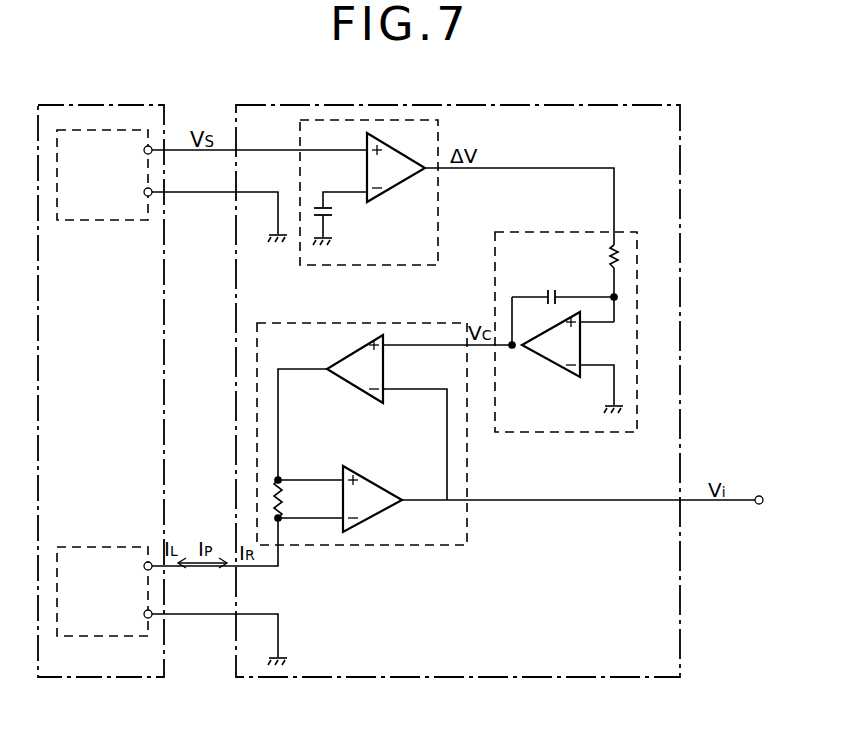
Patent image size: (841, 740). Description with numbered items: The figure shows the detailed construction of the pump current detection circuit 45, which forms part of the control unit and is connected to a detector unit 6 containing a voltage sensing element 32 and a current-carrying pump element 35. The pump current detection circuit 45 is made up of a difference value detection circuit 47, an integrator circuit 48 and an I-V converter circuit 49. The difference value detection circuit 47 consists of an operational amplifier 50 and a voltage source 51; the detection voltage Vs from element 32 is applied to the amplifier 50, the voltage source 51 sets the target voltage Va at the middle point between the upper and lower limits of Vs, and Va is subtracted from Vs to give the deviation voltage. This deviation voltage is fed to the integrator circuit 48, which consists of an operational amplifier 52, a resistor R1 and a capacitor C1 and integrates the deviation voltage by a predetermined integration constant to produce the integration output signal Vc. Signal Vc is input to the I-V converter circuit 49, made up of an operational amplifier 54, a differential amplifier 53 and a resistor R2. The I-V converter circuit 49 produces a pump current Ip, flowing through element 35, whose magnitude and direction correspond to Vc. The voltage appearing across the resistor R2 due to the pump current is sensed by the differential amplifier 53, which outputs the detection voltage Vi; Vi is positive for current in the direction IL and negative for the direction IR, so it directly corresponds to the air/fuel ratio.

The detector unit 6 is at (120, 677).
The pump current detection circuit 45 is at (397, 679).
The voltage sensor element 32 is at (118, 188).
The current sensor element 35 is at (118, 608).
The difference value detection circuit 47 is at (392, 192).
The operational amplifier 50 is at (397, 183).
The voltage source 51 is at (326, 218).
The integrator circuit 48 is at (566, 354).
The operational amplifier 52 is at (528, 352).
The resistor R1 is at (595, 259).
The capacitor C1 is at (563, 286).
The I-V converter circuit 49 is at (362, 456).
The differential amplifier 53 is at (371, 480).
The operational amplifier 54 is at (337, 375).
The resistor R2 is at (292, 499).